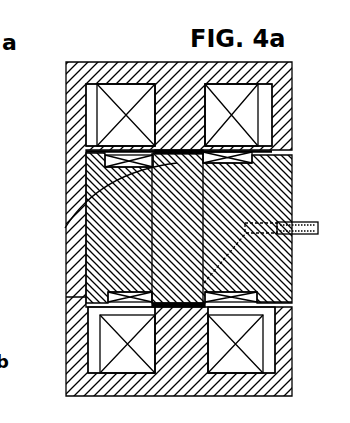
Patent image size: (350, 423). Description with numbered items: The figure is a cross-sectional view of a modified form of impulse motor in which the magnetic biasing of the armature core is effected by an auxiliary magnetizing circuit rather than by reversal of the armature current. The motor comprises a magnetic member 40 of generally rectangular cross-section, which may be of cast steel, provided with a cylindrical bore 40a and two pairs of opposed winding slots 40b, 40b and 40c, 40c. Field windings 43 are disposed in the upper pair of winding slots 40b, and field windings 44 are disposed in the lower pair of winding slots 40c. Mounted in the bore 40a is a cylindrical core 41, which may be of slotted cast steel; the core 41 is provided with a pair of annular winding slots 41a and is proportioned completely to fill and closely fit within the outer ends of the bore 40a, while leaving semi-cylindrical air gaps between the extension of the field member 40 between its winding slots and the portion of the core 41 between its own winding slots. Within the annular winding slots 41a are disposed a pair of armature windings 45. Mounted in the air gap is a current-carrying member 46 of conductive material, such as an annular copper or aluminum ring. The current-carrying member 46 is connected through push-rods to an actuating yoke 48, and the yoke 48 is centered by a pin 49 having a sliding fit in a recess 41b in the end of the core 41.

The magnetic member 40 is at (283, 82).
The cylindrical bore 40a is at (73, 297).
The winding slots 40b is at (91, 120).
The winding slots 40c is at (93, 350).
The cylindrical core 41 is at (278, 184).
The annular winding slots 41a is at (68, 246).
The recess 41b is at (280, 225).
The field windings 43 is at (121, 95).
The field windings 44 is at (128, 365).
The armature windings 45 is at (105, 165).
The current-carrying member 46 is at (105, 151).
The actuating yoke 48 is at (302, 237).
The pin 49 is at (318, 233).